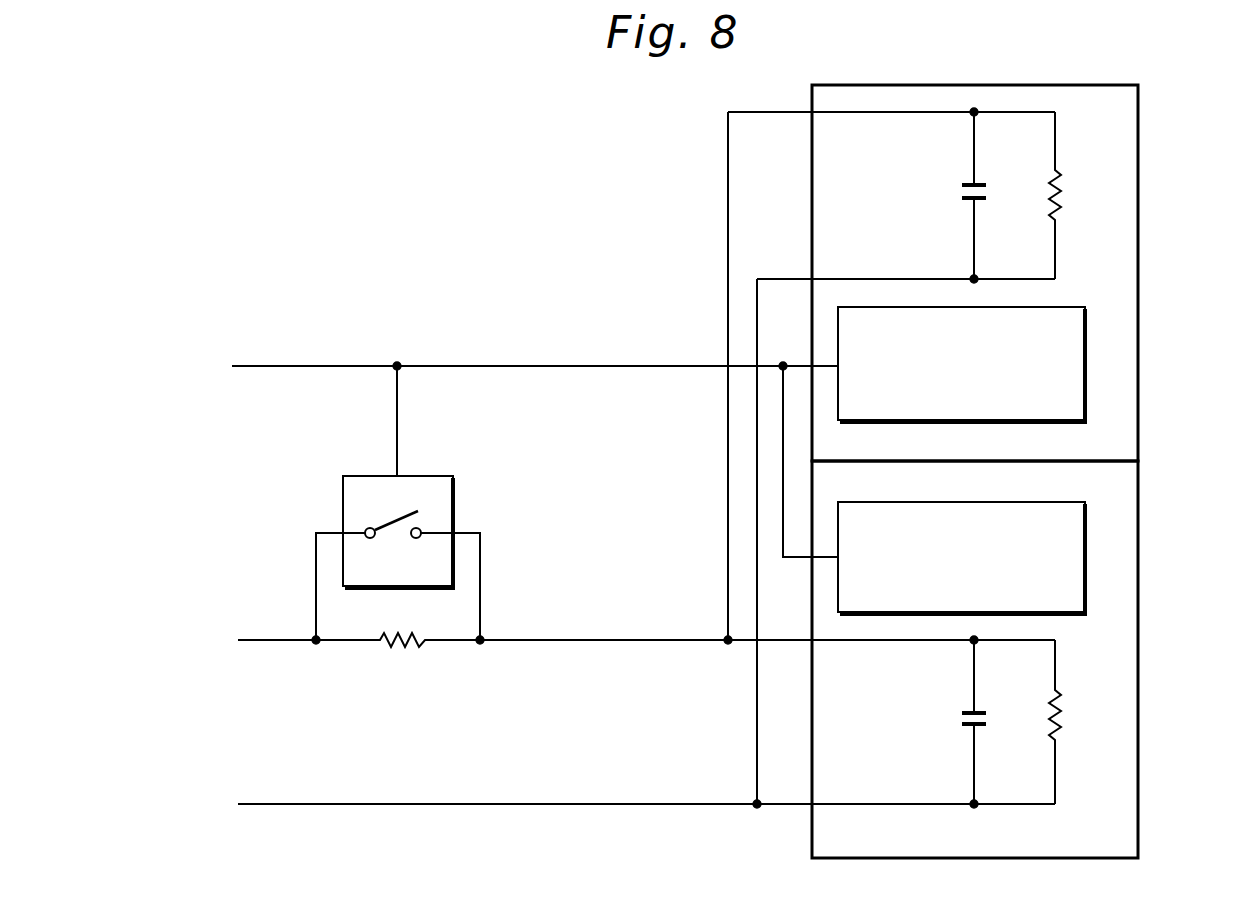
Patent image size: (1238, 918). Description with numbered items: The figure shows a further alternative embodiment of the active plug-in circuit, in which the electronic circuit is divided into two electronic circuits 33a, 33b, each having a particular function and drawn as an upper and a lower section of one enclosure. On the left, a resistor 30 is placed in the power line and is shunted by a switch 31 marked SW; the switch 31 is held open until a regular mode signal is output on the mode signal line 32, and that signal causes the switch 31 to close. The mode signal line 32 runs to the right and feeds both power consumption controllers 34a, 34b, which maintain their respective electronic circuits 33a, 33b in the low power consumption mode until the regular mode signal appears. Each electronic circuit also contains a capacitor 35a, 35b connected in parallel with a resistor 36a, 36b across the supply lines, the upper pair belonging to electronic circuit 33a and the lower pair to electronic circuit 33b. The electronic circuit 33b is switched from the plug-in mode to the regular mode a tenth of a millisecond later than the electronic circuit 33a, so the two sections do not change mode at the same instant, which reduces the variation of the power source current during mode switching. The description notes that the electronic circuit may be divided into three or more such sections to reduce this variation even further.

The resistor 30 is at (405, 645).
The switch 31 is at (455, 487).
The mode signal line 32 is at (292, 366).
The electronic circuit 33a is at (1140, 137).
The electronic circuit 33b is at (1140, 549).
The power consumption controller 34a is at (960, 423).
The power consumption controller 34b is at (957, 502).
The capacitor 35a is at (960, 190).
The capacitor 35b is at (958, 719).
The resistor 36a is at (1060, 188).
The resistor 36b is at (1060, 706).